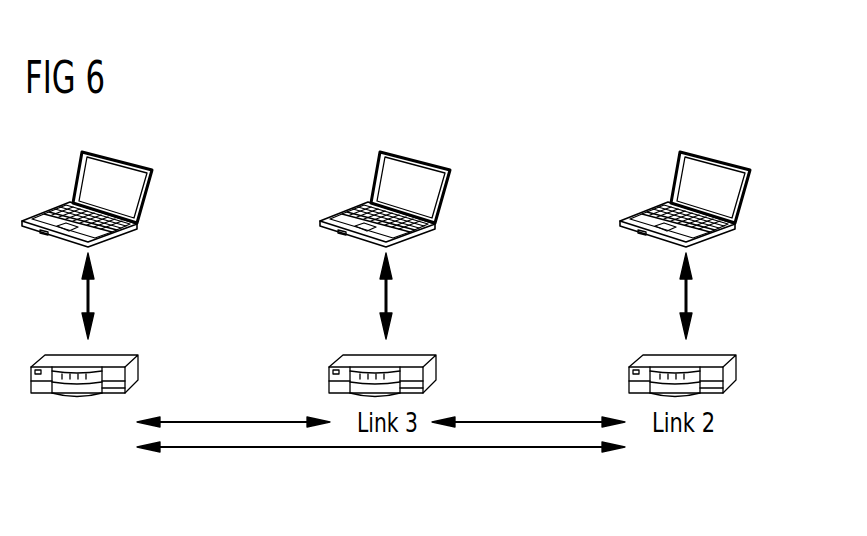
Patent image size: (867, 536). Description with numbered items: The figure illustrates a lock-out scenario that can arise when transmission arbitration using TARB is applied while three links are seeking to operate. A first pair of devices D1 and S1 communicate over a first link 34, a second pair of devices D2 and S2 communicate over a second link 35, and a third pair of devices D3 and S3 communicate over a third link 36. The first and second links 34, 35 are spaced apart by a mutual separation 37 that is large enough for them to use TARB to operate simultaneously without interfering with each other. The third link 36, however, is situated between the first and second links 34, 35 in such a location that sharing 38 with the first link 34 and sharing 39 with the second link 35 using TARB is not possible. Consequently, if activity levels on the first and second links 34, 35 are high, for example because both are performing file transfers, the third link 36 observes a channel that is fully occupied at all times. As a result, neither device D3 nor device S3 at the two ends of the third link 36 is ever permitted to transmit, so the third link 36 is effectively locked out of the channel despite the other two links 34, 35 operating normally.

The device D1 is at (113, 165).
The device D2 is at (711, 165).
The device D3 is at (411, 165).
The device S1 is at (121, 362).
The device S2 is at (719, 362).
The device S3 is at (419, 362).
The first link 34 is at (83, 299).
The second link 35 is at (681, 299).
The third link 36 is at (381, 299).
The mutual separation 37 is at (381, 449).
The sharing 38 is at (234, 420).
The sharing 39 is at (530, 420).